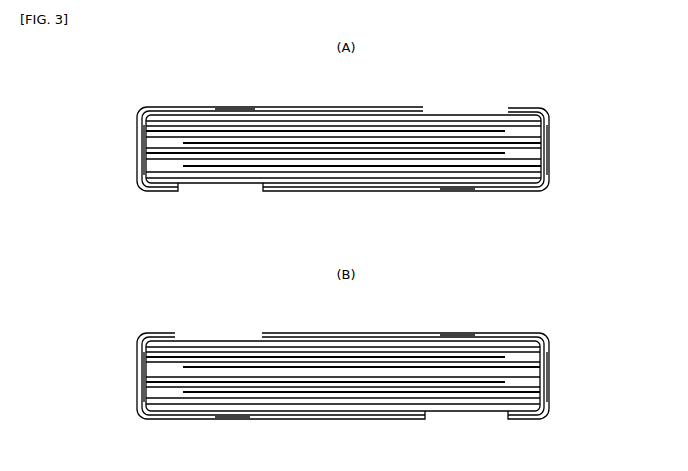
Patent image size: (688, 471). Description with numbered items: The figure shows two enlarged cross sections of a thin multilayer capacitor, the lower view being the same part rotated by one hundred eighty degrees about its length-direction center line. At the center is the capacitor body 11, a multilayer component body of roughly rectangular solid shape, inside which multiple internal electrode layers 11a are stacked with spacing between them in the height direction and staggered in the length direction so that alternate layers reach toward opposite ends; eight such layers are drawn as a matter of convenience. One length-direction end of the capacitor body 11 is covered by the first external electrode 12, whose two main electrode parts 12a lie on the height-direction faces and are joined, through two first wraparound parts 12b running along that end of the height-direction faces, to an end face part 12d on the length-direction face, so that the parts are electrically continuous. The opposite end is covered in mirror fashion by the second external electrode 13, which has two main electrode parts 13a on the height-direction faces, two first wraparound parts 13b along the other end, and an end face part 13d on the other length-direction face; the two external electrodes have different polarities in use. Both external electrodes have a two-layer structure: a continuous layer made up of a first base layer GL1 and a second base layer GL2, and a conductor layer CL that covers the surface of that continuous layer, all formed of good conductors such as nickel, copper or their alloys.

The capacitor body 11 is at (462, 115).
The internal electrode layers 11a is at (378, 130).
The first external electrode 12 is at (137, 146).
The main electrode parts 12a is at (280, 107).
The first wraparound parts 12b is at (160, 191).
The end face part 12d is at (114, 263).
The second external electrode 13 is at (549, 146).
The main electrode parts 13a is at (393, 191).
The first wraparound parts 13b is at (518, 108).
The end face part 13d is at (574, 263).
The conductor layer CL is at (189, 107).
The first base layer GL1 is at (137, 122).
The second base layer GL2 is at (232, 107).